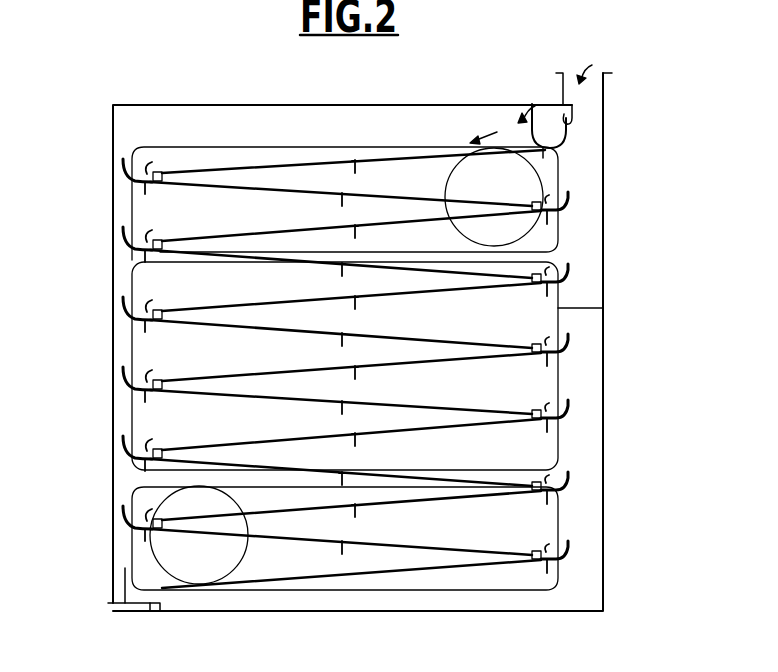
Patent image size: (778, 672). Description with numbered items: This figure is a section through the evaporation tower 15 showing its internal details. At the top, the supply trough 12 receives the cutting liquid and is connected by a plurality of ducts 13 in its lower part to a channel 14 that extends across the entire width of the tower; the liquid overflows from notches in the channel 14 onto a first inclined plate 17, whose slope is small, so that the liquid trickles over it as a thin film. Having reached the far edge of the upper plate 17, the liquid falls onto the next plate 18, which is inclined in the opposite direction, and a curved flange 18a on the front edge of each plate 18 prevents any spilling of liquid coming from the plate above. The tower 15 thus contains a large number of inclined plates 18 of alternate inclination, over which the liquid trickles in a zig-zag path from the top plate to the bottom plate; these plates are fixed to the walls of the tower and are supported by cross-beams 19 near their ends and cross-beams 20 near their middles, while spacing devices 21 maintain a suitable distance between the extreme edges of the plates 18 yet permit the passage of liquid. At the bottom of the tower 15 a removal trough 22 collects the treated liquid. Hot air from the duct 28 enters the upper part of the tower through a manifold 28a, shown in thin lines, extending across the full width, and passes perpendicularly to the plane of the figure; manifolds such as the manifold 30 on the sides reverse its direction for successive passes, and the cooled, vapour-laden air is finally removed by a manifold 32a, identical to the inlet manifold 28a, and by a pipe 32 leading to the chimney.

The supply trough 12 is at (598, 86).
The feed ducts 13 is at (570, 113).
The channel 14 is at (560, 133).
The evaporation tower 15 is at (606, 254).
The first inclined plate 17 is at (248, 168).
The inclined plates 18 is at (285, 193).
The curved flange 18a is at (123, 161).
The cross-beams 19 is at (147, 257).
The cross-beams 20 is at (358, 305).
The spacing devices 21 is at (166, 240).
The removal trough 22 is at (151, 605).
The hot air duct 28 is at (135, 150).
The inlet manifold 28a is at (530, 178).
The manifold 30 is at (560, 308).
The exhaust pipe 32 is at (123, 553).
The outlet manifold 32a is at (170, 507).